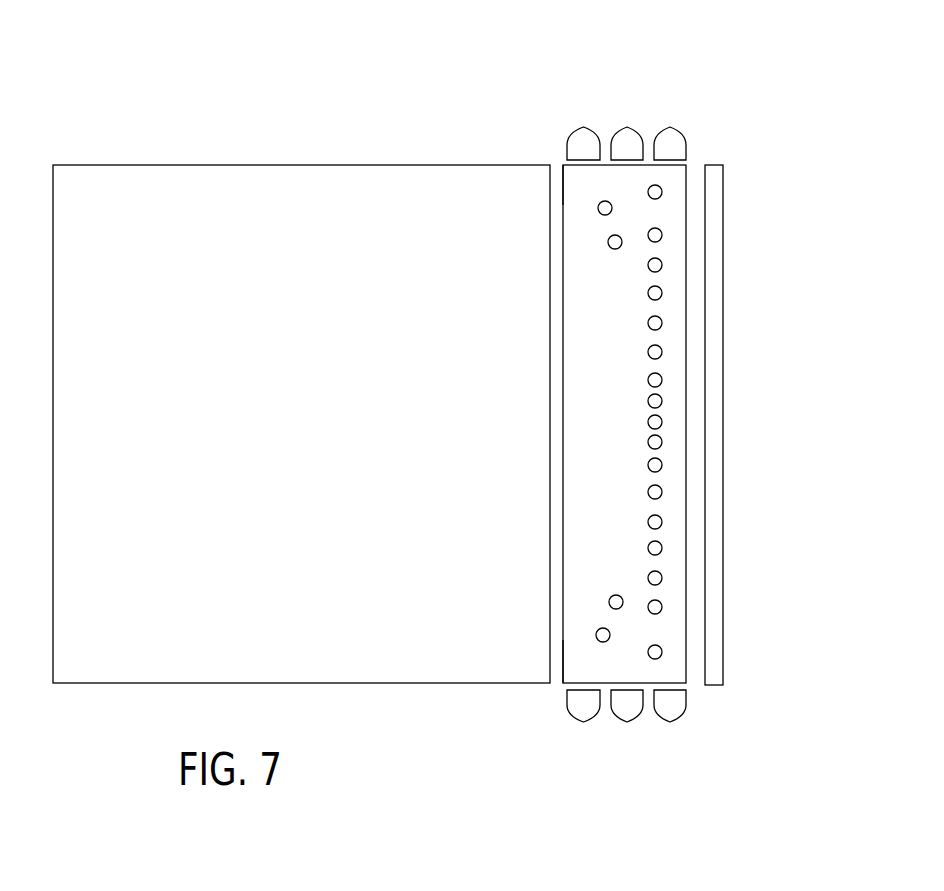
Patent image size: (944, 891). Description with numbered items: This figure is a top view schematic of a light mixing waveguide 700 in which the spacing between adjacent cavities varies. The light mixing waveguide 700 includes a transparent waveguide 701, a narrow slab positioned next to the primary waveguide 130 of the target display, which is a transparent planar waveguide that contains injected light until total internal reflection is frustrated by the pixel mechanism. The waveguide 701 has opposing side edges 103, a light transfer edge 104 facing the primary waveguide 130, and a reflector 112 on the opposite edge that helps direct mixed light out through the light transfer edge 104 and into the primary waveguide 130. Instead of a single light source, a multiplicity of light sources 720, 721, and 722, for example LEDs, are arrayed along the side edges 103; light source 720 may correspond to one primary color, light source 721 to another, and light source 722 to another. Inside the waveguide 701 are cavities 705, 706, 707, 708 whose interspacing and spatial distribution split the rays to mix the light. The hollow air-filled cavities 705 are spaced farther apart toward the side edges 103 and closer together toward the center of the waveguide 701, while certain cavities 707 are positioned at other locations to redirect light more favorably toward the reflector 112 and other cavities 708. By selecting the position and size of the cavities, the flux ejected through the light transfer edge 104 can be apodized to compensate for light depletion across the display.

The light mixing waveguide 700 is at (672, 61).
The side edges 103 is at (561, 164).
The light transfer edge 104 is at (562, 650).
The reflector 112 is at (715, 352).
The primary waveguide 130 is at (305, 419).
The transparent waveguide 701 is at (630, 453).
The cavities 705 is at (660, 290).
The cavities 706 is at (662, 440).
The cavities 707 is at (600, 214).
The cavities 708 is at (660, 188).
The light source 720 is at (574, 132).
The light source 721 is at (637, 128).
The light source 722 is at (683, 128).